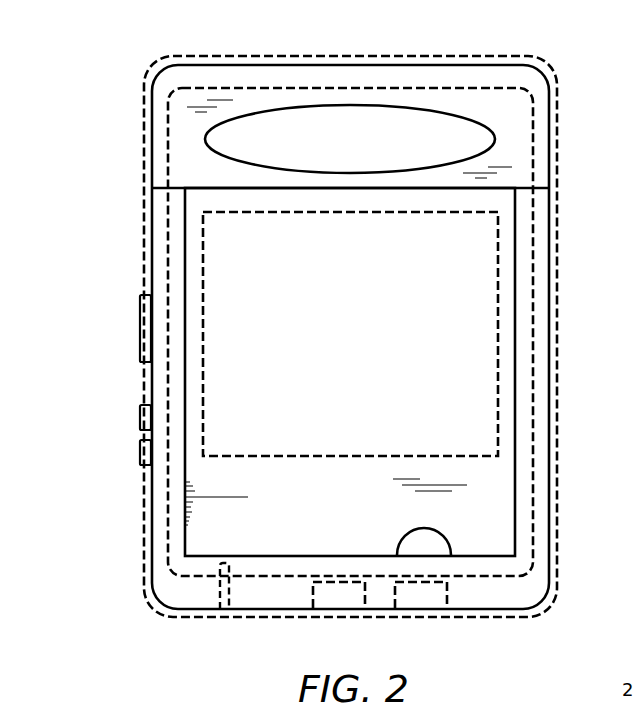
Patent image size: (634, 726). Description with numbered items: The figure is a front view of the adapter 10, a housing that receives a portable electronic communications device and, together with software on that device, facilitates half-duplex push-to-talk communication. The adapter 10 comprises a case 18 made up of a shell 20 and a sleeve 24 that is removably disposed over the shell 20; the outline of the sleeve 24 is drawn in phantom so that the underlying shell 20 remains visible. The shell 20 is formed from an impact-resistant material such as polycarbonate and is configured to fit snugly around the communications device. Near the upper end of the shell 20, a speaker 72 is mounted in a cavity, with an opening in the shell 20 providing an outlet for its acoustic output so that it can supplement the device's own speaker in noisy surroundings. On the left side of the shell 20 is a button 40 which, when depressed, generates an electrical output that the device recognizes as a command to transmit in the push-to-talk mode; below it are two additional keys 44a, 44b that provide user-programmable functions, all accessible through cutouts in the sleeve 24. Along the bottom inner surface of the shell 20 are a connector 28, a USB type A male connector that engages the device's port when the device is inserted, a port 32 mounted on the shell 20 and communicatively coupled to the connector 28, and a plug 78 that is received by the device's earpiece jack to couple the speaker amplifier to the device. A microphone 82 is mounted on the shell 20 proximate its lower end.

The adapter 10 is at (333, 339).
The case 18 is at (545, 59).
The shell 20 is at (544, 79).
The sleeve 24 is at (471, 55).
The connector 28 is at (328, 600).
The port 32 is at (417, 600).
The button 40 is at (140, 332).
The key 44a is at (140, 418).
The key 44b is at (140, 456).
The speaker 72 is at (250, 133).
The plug 78 is at (220, 590).
The microphone 82 is at (425, 540).